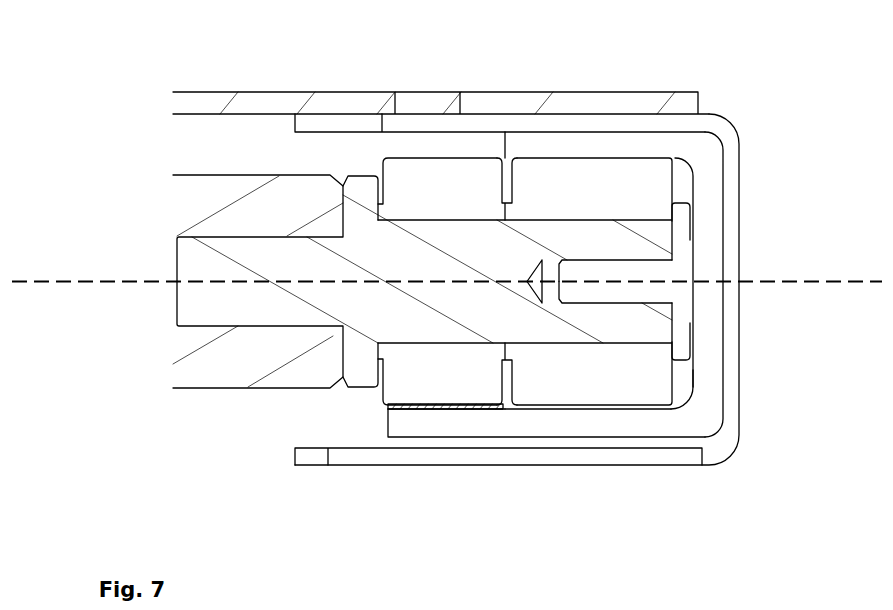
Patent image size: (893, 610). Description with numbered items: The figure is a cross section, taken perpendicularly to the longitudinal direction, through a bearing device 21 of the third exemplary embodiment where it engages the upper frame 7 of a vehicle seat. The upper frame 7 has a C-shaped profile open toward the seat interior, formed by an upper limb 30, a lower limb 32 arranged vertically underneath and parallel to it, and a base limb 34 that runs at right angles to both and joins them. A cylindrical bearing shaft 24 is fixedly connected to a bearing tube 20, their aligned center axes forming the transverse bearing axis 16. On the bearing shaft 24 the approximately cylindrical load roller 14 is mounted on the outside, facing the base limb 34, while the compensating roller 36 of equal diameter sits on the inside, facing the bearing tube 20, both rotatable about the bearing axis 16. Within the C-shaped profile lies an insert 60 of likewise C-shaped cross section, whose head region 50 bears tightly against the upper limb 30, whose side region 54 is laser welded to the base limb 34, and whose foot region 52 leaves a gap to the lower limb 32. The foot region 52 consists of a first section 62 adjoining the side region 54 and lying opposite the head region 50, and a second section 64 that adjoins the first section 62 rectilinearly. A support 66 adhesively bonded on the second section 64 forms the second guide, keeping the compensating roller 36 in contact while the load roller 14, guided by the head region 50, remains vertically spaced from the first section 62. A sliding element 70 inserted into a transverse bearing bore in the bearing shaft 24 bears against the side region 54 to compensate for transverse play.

The upper frame 7 is at (358, 123).
The load roller 14 is at (585, 197).
The bearing axis 16 is at (132, 278).
The bearing tube 20 is at (212, 363).
The bearing device 21 is at (137, 61).
The bearing shaft 24 is at (453, 302).
The upper limb 30 is at (428, 123).
The lower limb 32 is at (632, 455).
The base limb 34 is at (730, 197).
The compensating roller 36 is at (470, 187).
The head region 50 is at (625, 143).
The foot region 52 is at (520, 425).
The side region 54 is at (708, 197).
The insert 60 is at (700, 425).
The first section 62 is at (587, 425).
The second section 64 is at (447, 415).
The support 66 is at (398, 407).
The sliding element 70 is at (673, 295).